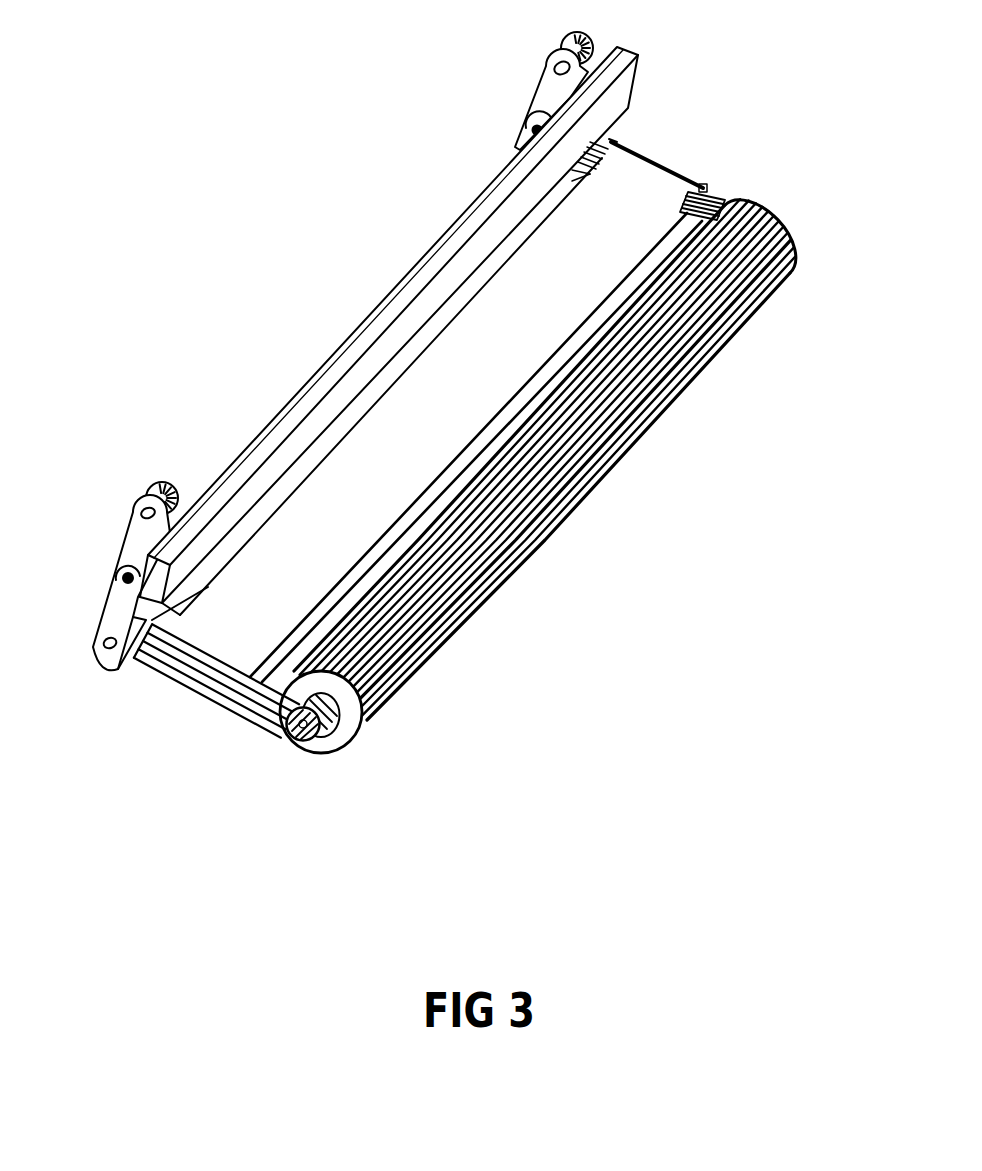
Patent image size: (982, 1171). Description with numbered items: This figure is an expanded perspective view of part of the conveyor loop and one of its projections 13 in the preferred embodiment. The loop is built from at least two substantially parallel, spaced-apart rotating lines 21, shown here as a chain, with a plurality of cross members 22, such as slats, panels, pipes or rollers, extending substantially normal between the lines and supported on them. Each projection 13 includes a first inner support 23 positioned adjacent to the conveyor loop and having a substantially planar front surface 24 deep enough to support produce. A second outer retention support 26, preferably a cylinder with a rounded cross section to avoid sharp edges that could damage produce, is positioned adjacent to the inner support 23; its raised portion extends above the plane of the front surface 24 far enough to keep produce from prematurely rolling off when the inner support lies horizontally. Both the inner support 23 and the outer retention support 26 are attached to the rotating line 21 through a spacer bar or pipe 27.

The projections 13 is at (707, 177).
The rotating lines 21 is at (135, 527).
The cross members 22 is at (385, 303).
The first inner support 23 is at (600, 258).
The front surface 24 is at (627, 166).
The second outer retention support 26 is at (627, 427).
The spacer bar or pipe 27 is at (250, 707).